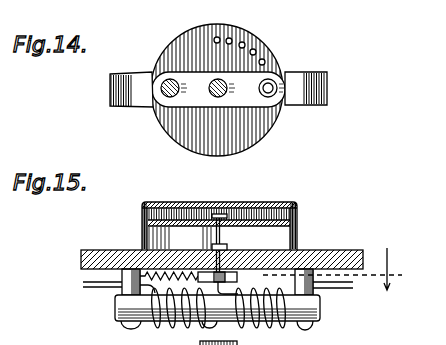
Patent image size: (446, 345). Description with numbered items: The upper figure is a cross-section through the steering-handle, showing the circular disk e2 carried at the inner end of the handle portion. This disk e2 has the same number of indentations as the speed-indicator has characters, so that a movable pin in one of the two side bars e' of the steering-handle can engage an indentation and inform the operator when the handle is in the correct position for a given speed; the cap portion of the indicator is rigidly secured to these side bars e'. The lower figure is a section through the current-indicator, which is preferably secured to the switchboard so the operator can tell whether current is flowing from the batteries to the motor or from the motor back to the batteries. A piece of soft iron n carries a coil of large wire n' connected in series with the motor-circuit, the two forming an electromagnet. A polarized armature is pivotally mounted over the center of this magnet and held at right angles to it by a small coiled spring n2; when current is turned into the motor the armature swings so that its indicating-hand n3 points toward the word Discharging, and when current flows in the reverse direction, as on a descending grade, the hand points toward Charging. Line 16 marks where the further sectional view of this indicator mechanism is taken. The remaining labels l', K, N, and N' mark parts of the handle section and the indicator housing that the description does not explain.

In FIG. 14, the side bars of the steering-handle e' is at (235, 64).
In FIG. 14, the pivot pin l' is at (246, 50).
In FIG. 14, the circular disk e2 is at (257, 128).
In FIG. 15, the base plate K is at (97, 250).
In FIG. 15, the casing N is at (242, 223).
In FIG. 15, the casing partition N' is at (221, 244).
In FIG. 15, the indicating-hand n3 is at (214, 214).
In FIG. 15, the small coiled spring n2 is at (177, 271).
In FIG. 15, the coil of large wire n' is at (213, 313).
In FIG. 15, the piece of soft iron n is at (217, 320).
In FIG. 15, the section line 16 is at (343, 269).